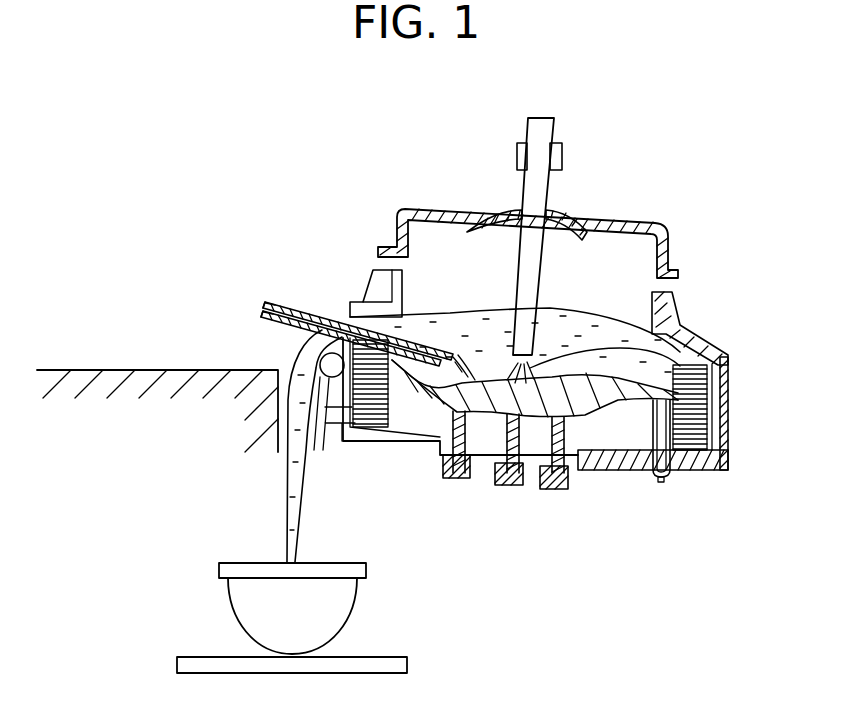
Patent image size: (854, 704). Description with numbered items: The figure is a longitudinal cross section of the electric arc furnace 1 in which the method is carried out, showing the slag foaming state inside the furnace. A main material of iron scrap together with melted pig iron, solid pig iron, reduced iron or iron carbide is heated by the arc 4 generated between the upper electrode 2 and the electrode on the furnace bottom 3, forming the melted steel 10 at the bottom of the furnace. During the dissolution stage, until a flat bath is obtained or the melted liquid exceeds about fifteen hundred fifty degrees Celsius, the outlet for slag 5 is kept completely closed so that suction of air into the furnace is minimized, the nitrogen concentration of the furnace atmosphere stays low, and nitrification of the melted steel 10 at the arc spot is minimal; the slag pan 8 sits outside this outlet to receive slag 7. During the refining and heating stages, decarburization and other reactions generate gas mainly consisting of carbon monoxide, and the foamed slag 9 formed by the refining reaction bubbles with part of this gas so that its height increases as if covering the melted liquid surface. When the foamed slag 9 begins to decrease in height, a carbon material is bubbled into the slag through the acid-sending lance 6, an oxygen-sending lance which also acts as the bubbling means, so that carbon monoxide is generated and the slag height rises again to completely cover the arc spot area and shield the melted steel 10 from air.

The electric arc furnace 1 is at (697, 211).
The upper electrode 2 is at (540, 120).
The electrode on the furnace bottom 3 is at (570, 487).
The arc 4 is at (682, 352).
The outlet for slag 5 is at (346, 322).
The acid-sending lance 6 is at (270, 302).
The slag 7 is at (287, 487).
The slag pan 8 is at (333, 613).
The foamed slag 9 is at (452, 314).
The melted steel 10 is at (606, 395).